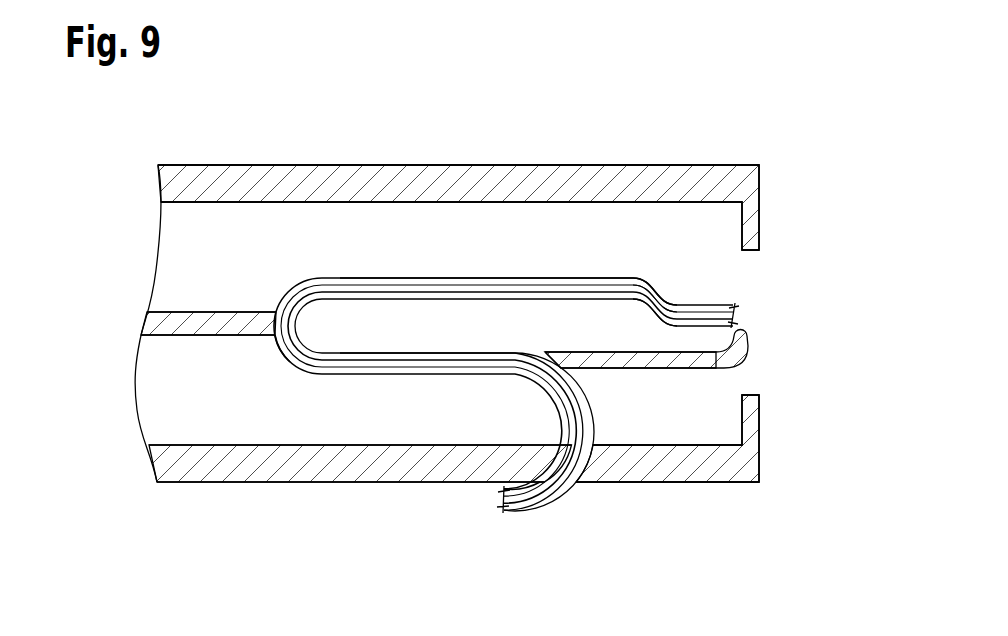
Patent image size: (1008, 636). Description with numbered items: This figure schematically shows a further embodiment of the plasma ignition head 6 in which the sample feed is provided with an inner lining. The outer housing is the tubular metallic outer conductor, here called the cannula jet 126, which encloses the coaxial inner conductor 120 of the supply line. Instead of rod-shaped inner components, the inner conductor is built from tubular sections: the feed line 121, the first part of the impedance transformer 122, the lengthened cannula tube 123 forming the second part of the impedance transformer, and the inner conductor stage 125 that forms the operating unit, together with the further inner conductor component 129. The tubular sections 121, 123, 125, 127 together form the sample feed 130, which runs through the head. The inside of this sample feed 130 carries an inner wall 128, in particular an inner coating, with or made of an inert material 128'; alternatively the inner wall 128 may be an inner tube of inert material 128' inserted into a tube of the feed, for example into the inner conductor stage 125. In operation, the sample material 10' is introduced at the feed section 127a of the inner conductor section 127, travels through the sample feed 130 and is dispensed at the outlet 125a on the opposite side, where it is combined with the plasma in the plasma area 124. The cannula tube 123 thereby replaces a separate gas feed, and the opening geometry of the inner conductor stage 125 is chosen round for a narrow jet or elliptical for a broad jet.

The plasma ignition head 6 is at (745, 112).
The cannula jet 126 is at (447, 175).
The inner conductor 120 is at (226, 330).
The sample feed 130 is at (333, 258).
The inner conductor stage 125 is at (521, 280).
The feed line 121 is at (398, 348).
The inner wall 128 is at (676, 267).
The inert material 128' is at (655, 277).
The outlet 125a is at (742, 303).
The plasma area 124 is at (750, 321).
The first part of the impedance transformer 122 is at (641, 372).
The inner conductor component 129 is at (270, 340).
The cannula tube 123 is at (558, 414).
The inner conductor section 127 is at (518, 499).
The feed section 127a is at (498, 512).
The sample material 10' is at (464, 521).